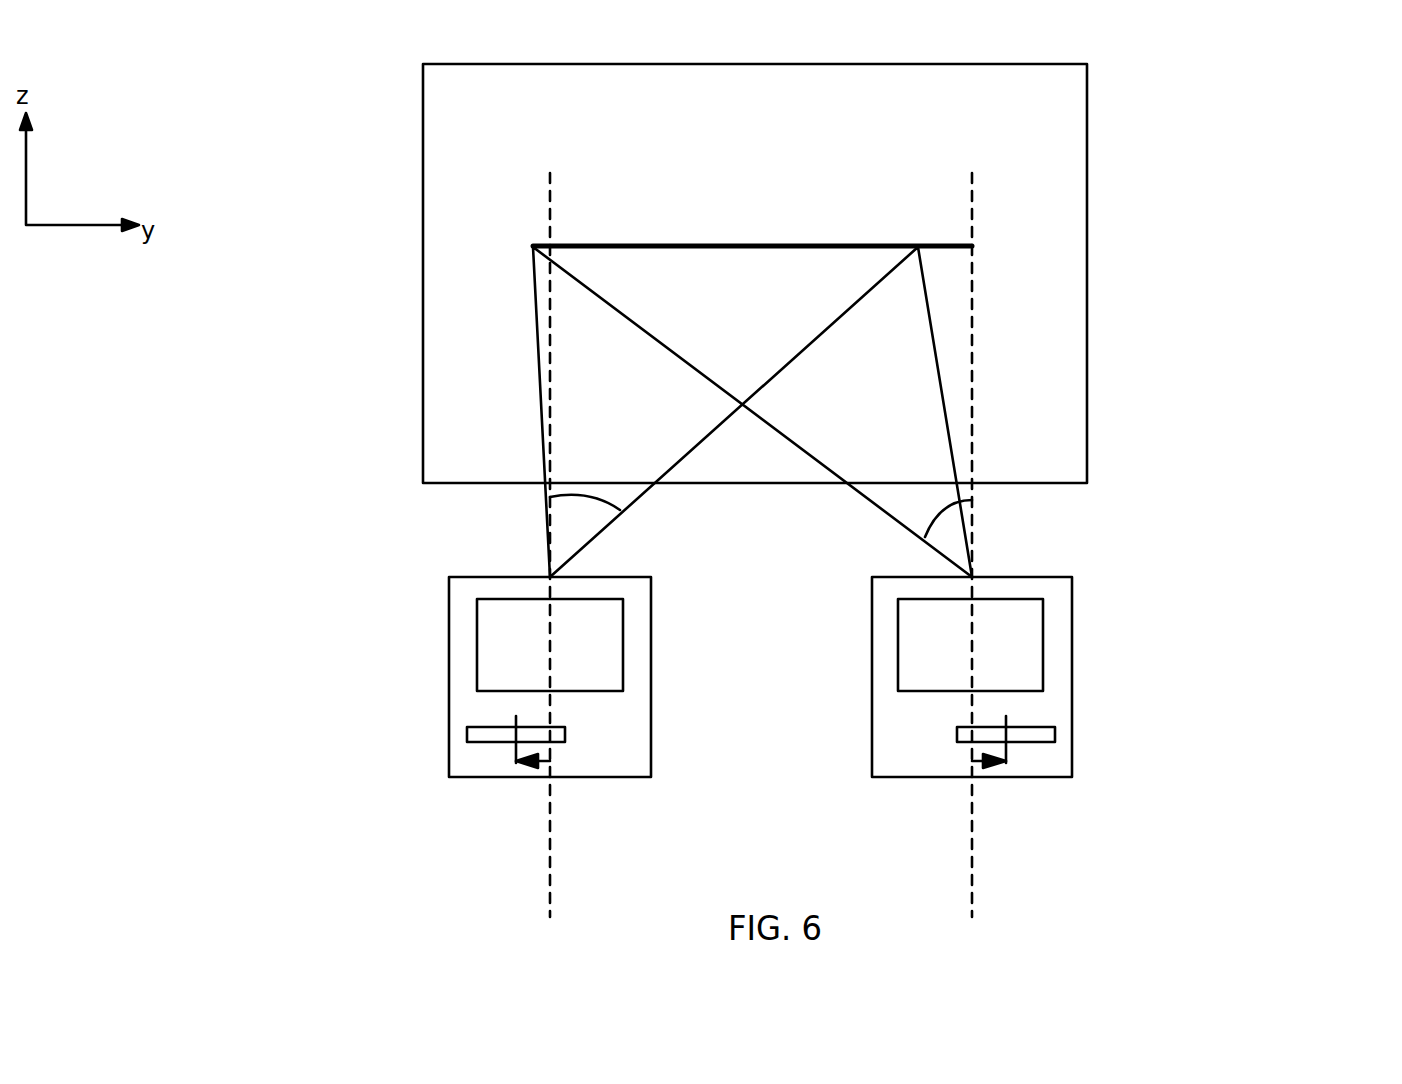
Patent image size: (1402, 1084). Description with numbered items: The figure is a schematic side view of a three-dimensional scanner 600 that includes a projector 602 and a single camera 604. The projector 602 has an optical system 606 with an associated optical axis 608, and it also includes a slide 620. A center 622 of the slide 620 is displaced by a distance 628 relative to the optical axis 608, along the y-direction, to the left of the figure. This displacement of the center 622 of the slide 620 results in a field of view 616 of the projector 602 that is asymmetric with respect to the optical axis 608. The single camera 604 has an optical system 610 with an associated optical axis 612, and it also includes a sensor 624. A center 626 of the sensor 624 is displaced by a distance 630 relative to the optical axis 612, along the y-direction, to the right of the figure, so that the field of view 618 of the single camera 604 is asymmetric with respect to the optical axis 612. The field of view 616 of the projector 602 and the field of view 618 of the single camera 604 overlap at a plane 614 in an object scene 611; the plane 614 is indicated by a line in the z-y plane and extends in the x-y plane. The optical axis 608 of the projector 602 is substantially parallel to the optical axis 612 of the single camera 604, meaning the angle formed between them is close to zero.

The 3D scanner 600 is at (1247, 160).
The projector 602 is at (619, 777).
The single camera 604 is at (882, 777).
The optical system 606 is at (477, 609).
The optical axis 608 is at (550, 194).
The optical system 610 is at (1043, 607).
The object scene 611 is at (1087, 104).
The optical axis 612 is at (972, 326).
The plane 614 is at (884, 246).
The field of view 616 is at (596, 495).
The field of view 618 is at (945, 520).
The slide 620 is at (480, 727).
The center 622 is at (507, 745).
The sensor 624 is at (1040, 727).
The center 626 is at (1013, 745).
The distance 628 is at (533, 770).
The distance 630 is at (975, 768).